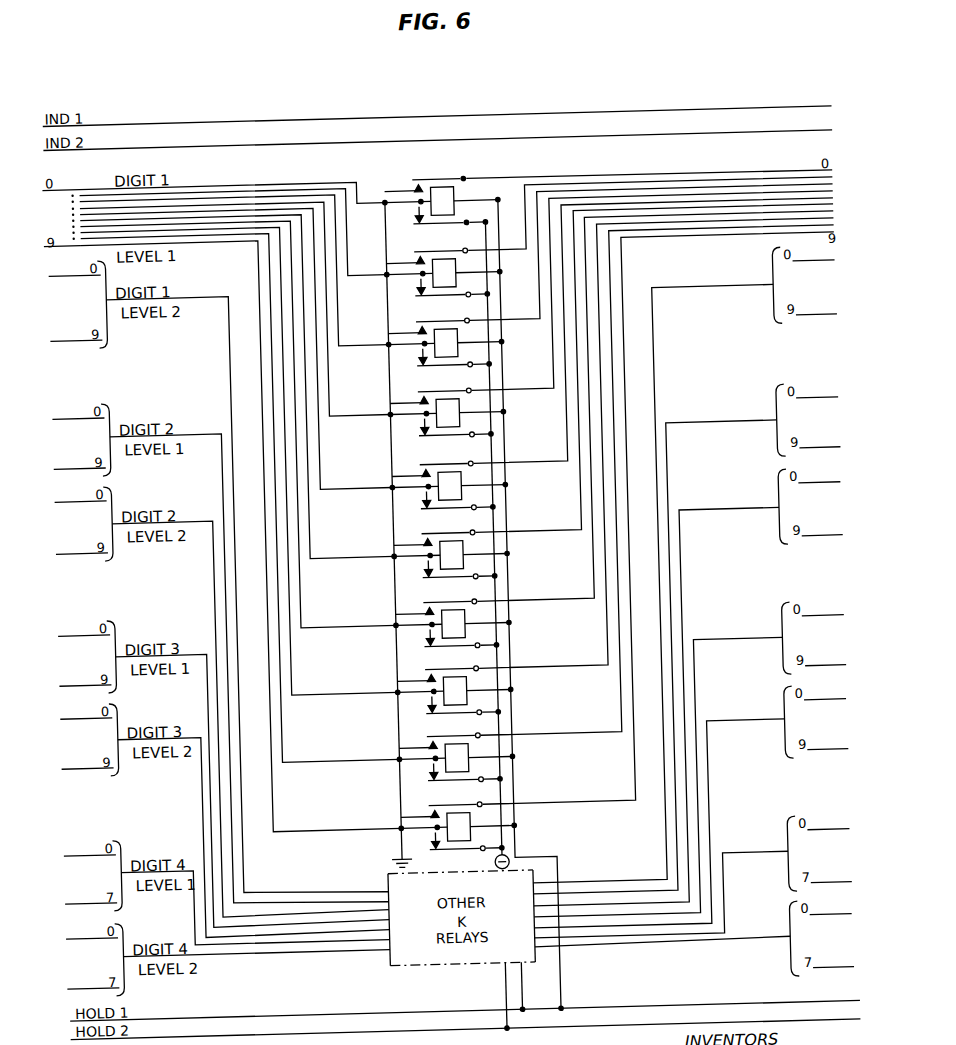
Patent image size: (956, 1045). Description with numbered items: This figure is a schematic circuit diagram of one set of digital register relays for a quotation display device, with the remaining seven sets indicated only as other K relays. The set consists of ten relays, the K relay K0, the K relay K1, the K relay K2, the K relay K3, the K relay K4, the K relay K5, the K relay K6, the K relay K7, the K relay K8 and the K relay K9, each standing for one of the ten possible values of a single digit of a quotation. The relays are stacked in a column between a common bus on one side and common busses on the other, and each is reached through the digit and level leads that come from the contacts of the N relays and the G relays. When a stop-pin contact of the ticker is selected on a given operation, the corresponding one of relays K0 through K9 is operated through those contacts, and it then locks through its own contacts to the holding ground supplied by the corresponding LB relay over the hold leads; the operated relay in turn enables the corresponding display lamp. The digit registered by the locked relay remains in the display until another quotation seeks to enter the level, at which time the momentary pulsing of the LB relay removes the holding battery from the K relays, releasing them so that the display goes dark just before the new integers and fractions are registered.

The K relay K0 is at (437, 201).
The K relay K1 is at (458, 241).
The K relay K2 is at (458, 279).
The K relay K3 is at (459, 318).
The K relay K4 is at (460, 357).
The K relay K5 is at (461, 395).
The K relay K6 is at (462, 432).
The K relay K7 is at (464, 469).
The K relay K8 is at (464, 505).
The K relay K9 is at (465, 543).